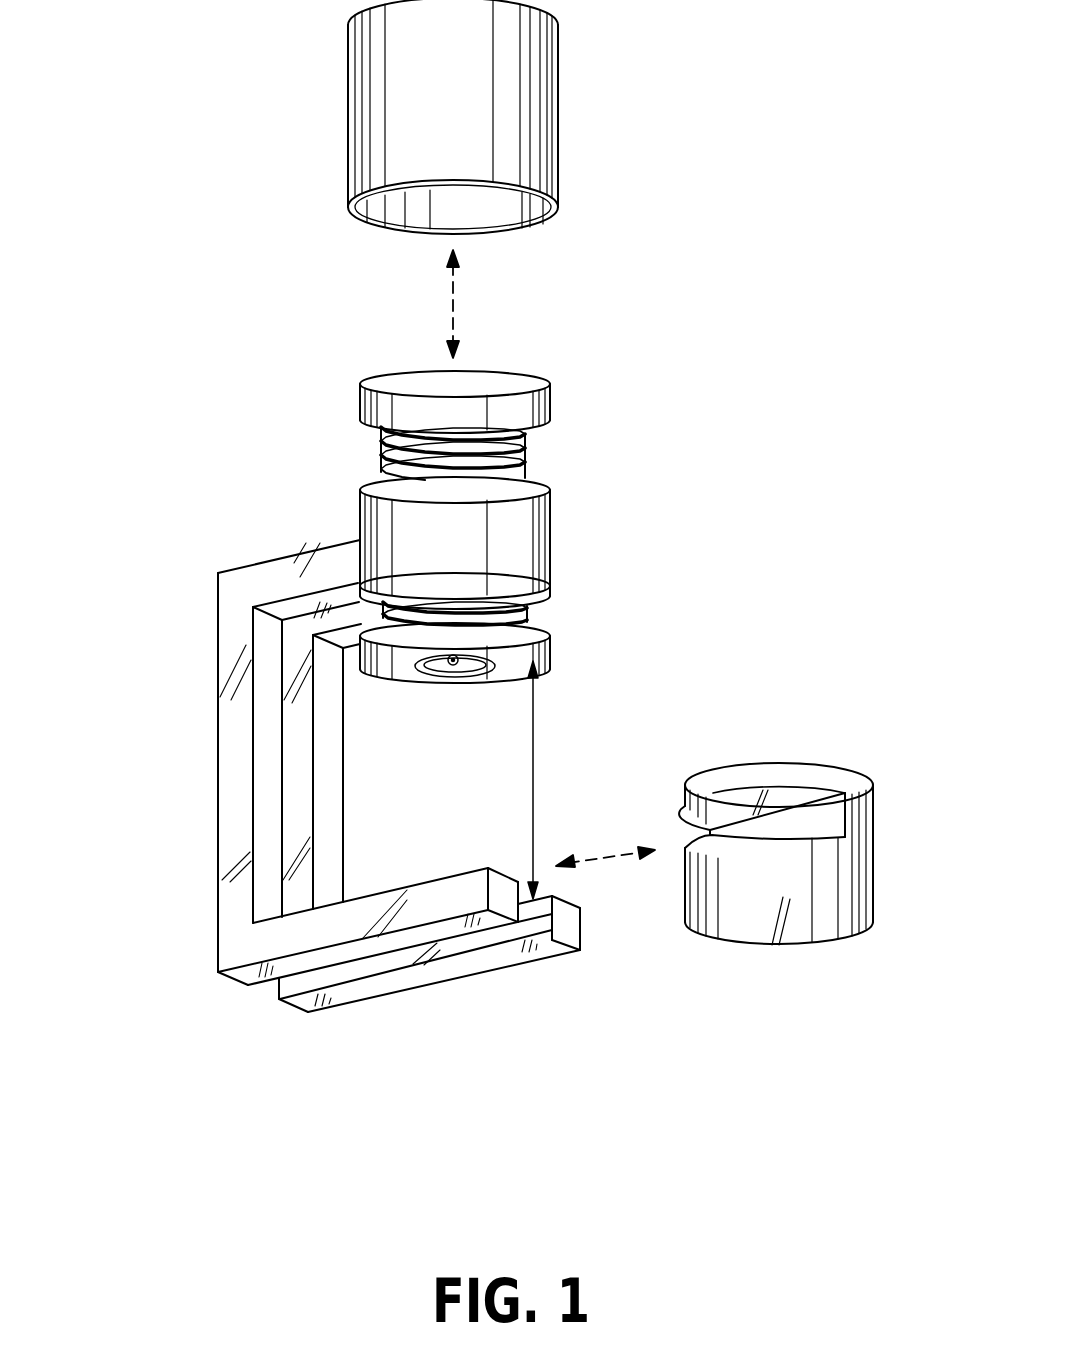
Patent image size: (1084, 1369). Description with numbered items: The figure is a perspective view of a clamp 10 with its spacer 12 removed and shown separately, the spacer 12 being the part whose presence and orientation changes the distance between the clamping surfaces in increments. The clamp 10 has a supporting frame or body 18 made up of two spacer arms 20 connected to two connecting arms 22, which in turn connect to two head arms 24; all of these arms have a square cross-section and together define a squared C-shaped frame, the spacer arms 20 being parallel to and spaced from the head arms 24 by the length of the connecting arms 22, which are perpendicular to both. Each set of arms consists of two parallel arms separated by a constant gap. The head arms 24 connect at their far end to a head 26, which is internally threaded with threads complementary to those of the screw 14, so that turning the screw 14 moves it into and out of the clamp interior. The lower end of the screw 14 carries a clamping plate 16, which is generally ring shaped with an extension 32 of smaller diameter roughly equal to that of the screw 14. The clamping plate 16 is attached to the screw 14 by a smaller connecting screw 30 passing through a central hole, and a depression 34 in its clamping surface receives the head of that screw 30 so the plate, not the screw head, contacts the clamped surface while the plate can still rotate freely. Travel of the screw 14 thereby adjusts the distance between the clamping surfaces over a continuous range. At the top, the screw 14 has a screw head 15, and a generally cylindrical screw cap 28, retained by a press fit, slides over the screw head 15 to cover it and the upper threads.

The clamp 10 is at (203, 456).
The spacer 12 is at (845, 762).
The screw 14 is at (523, 470).
The screw head 15 is at (550, 405).
The clamping plate 16 is at (553, 647).
The body 18 is at (204, 567).
The spacer arms 20 is at (420, 978).
The connecting arms 22 is at (217, 782).
The head arms 24 is at (286, 556).
The head 26 is at (553, 542).
The screw cap 28 is at (560, 91).
The connecting screw 30 is at (453, 668).
The extension 32 is at (552, 617).
The depression 34 is at (482, 674).